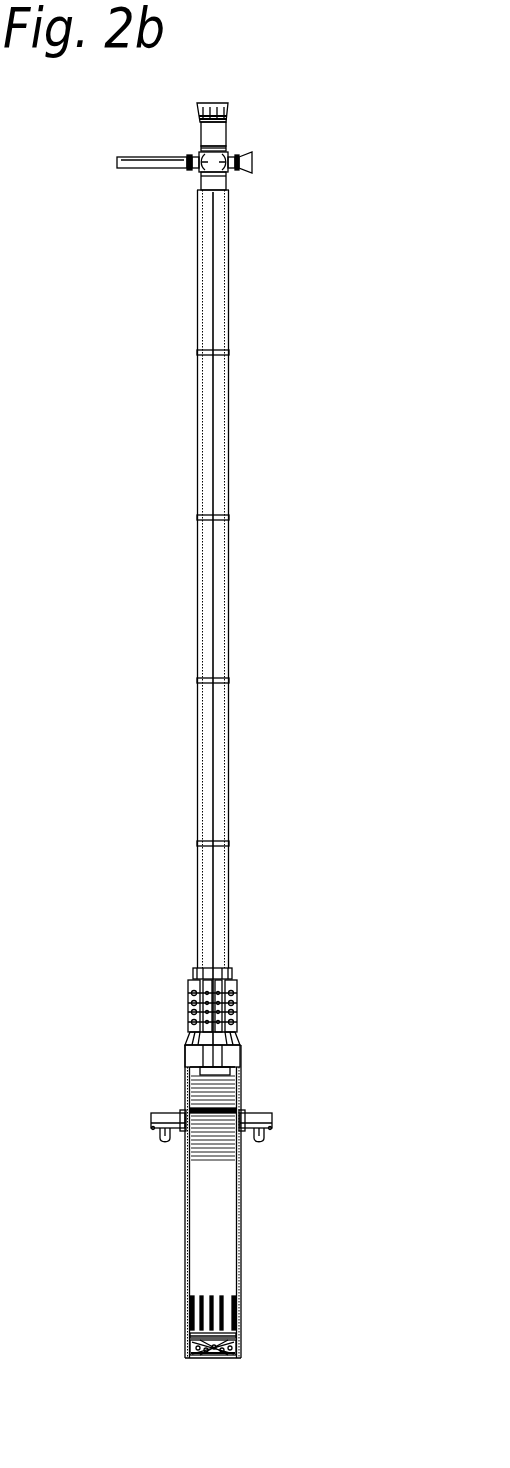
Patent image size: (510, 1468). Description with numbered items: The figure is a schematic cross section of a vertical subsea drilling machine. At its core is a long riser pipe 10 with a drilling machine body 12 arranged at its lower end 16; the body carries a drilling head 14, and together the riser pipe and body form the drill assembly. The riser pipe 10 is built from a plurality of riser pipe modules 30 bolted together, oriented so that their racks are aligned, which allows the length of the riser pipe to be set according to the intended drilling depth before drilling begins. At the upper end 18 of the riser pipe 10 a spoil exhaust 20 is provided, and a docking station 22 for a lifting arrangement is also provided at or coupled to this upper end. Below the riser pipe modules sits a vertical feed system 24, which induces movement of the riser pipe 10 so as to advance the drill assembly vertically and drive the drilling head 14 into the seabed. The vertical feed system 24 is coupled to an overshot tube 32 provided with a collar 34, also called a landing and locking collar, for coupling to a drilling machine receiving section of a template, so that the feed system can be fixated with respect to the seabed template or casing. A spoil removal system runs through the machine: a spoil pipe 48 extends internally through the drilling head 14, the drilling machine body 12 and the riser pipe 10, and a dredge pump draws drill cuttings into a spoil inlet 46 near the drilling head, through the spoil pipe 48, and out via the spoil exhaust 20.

The riser pipe 10 is at (276, 270).
The drilling machine body 12 is at (223, 1267).
The drilling head 14 is at (241, 1345).
The lower end 16 is at (230, 1052).
The upper end 18 is at (203, 188).
The spoil exhaust 20 is at (118, 160).
The docking station 22 is at (214, 103).
The vertical feed system 24 is at (260, 993).
The riser pipe modules 30 is at (205, 583).
The overshot tube 32 is at (241, 1195).
The collar 34 is at (272, 1120).
The spoil inlet 46 is at (197, 1350).
The spoil pipe 48 is at (218, 215).